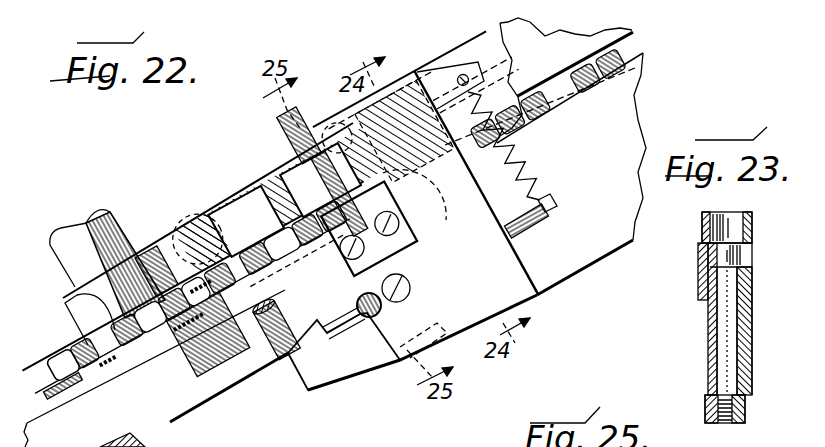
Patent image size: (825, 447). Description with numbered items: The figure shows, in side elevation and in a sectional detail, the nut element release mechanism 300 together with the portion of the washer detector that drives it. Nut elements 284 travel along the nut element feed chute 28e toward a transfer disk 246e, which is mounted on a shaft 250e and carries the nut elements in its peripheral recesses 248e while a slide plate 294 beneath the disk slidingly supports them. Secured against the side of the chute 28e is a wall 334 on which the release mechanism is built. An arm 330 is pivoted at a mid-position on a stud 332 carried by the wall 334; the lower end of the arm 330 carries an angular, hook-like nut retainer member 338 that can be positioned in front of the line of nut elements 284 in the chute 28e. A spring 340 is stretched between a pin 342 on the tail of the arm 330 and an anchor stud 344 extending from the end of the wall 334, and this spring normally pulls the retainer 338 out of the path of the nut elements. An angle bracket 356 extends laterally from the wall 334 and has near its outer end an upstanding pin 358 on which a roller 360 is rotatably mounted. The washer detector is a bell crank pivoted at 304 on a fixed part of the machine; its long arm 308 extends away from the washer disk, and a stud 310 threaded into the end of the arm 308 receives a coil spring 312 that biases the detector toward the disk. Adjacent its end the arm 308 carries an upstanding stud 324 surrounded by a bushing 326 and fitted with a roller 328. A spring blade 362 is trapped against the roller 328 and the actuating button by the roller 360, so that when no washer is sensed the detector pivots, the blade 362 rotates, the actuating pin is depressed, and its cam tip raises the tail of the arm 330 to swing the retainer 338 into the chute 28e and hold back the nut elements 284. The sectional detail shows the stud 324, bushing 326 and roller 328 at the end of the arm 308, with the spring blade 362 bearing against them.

In FIG. 22, the nut element release mechanism 300 is at (436, 72).
In FIG. 22, the wall 334 is at (540, 296).
In FIG. 22, the nut element feed chute 28e is at (644, 61).
In FIG. 22, the spring 340 is at (533, 150).
In FIG. 22, the pin 342 is at (464, 74).
In FIG. 22, the anchor stud 344 is at (513, 230).
In FIG. 22, the stud 332 is at (413, 181).
In FIG. 22, the roller 360 is at (268, 163).
In FIG. 22, the upstanding pin 358 is at (303, 114).
In FIG. 22, the arm 330 is at (256, 178).
In FIG. 22, the spring blade 362 is at (230, 198).
In FIG. 23, the spring blade 362 is at (698, 258).
In FIG. 22, the nut retainer member 338 is at (172, 242).
In FIG. 22, the angle bracket 356 is at (393, 229).
In FIG. 22, the coil spring 312 is at (383, 311).
In FIG. 22, the stud 310 is at (338, 313).
In FIG. 22, the long arm 308 is at (222, 382).
In FIG. 23, the long arm 308 is at (704, 405).
In FIG. 22, the pivot 304 is at (230, 390).
In FIG. 22, the shaft 250e is at (110, 210).
In FIG. 22, the peripheral recesses 248e is at (180, 291).
In FIG. 22, the transfer disk 246e is at (83, 290).
In FIG. 22, the nut elements 284 is at (62, 362).
In FIG. 22, the slide plate 294 is at (80, 388).
In FIG. 23, the roller 328 is at (703, 228).
In FIG. 23, the upstanding stud 324 is at (723, 320).
In FIG. 23, the bushing 326 is at (714, 345).